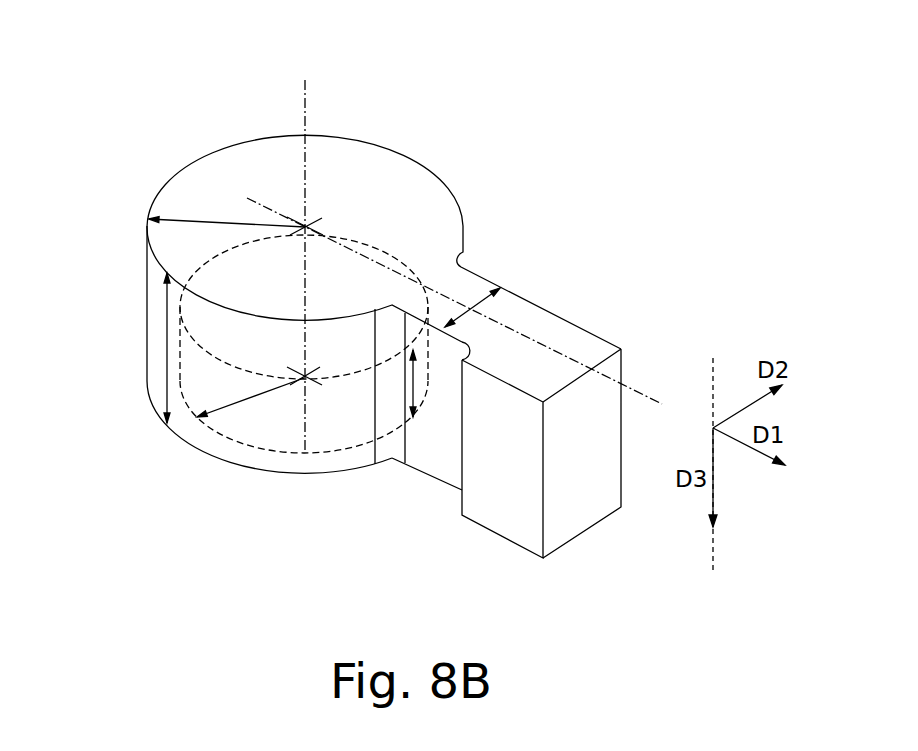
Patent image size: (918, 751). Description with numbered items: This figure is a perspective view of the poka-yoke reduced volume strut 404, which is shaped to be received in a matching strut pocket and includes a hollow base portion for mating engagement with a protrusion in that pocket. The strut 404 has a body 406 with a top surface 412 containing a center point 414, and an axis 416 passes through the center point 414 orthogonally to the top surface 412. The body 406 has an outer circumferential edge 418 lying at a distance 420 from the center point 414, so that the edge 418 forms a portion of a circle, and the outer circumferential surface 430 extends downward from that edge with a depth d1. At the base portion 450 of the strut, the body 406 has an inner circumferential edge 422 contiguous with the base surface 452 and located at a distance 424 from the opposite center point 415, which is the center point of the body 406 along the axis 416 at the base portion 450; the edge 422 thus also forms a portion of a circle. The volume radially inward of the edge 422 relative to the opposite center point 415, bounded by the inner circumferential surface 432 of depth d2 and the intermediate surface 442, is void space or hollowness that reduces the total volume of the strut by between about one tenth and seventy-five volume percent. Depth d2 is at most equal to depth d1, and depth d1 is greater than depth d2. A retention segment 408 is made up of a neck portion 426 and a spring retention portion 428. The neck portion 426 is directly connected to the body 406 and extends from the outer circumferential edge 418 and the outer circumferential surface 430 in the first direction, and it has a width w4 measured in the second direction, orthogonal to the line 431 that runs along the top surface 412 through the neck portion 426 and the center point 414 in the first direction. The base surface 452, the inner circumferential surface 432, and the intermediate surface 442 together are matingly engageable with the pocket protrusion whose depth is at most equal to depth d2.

The strut 404 is at (564, 240).
The body 406 is at (313, 127).
The retention segment 408 is at (598, 313).
The top surface 412 is at (227, 172).
The center point 414 is at (321, 223).
The opposite center point 415 is at (301, 382).
The axis 416 is at (306, 124).
The outer circumferential edge 418 is at (177, 178).
The distance 420 is at (180, 218).
The inner circumferential edge 422 is at (187, 413).
The distance 424 is at (231, 408).
The neck portion 426 is at (459, 344).
The spring retention portion 428 is at (526, 396).
The outer circumferential surface 430 is at (158, 322).
The line 431 is at (646, 392).
The inner circumferential surface 432 is at (221, 468).
The intermediate surface 442 is at (332, 384).
The base portion 450 is at (363, 480).
The base surface 452 is at (373, 469).
The depth d1 is at (167, 297).
The depth d2 is at (416, 396).
The width w4 is at (477, 304).